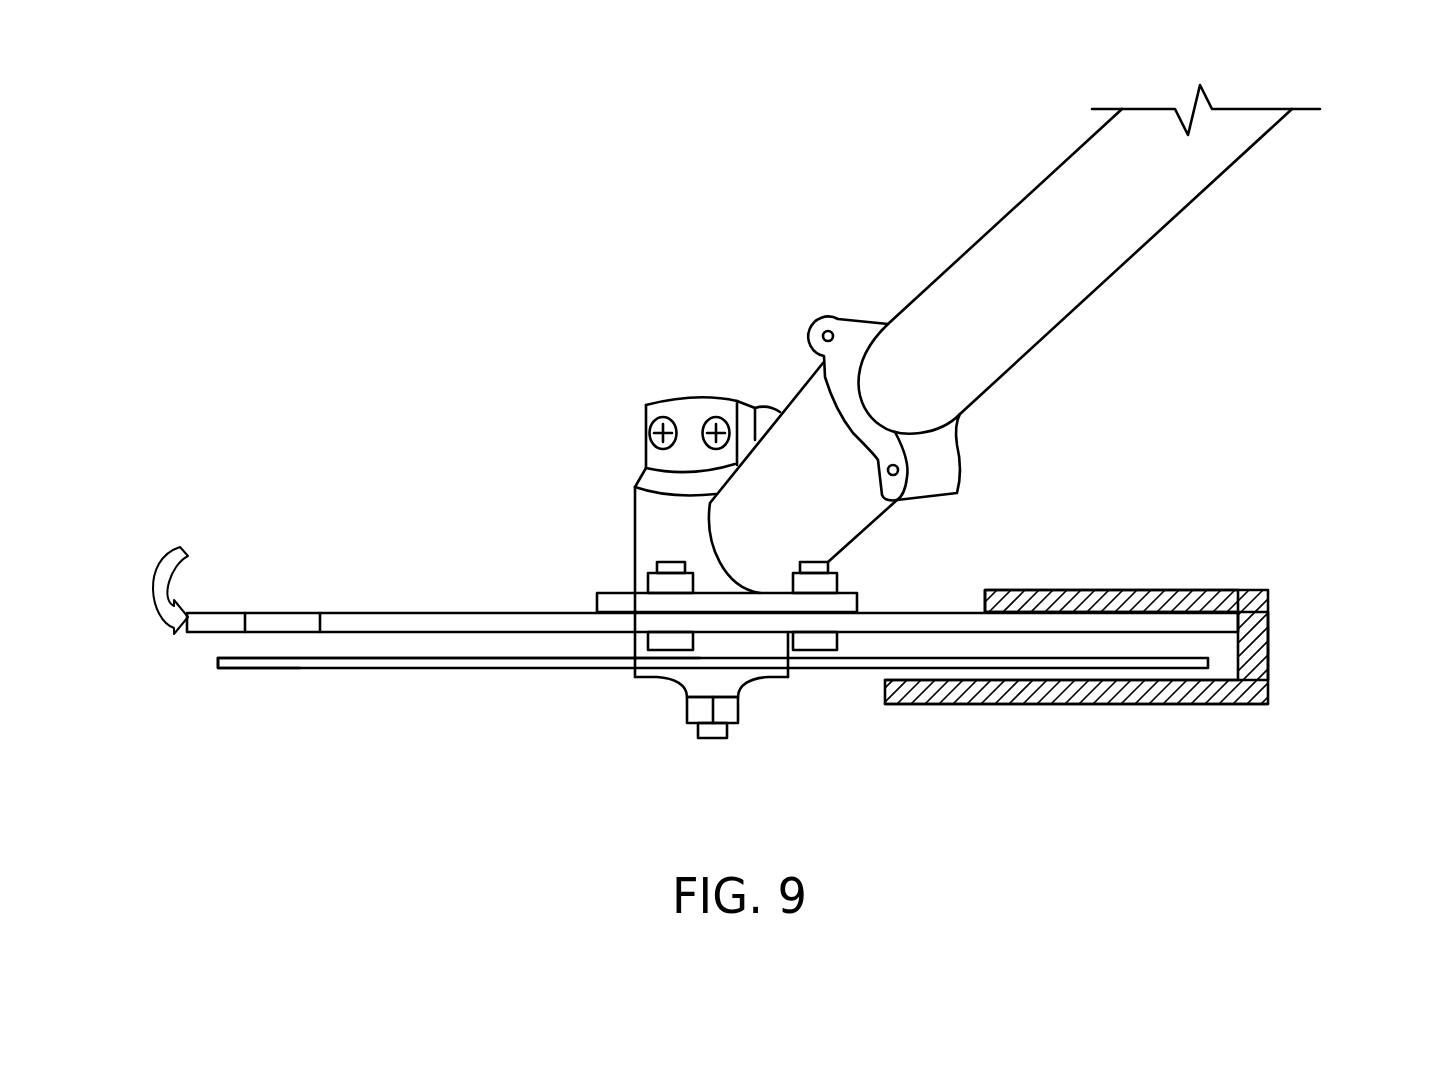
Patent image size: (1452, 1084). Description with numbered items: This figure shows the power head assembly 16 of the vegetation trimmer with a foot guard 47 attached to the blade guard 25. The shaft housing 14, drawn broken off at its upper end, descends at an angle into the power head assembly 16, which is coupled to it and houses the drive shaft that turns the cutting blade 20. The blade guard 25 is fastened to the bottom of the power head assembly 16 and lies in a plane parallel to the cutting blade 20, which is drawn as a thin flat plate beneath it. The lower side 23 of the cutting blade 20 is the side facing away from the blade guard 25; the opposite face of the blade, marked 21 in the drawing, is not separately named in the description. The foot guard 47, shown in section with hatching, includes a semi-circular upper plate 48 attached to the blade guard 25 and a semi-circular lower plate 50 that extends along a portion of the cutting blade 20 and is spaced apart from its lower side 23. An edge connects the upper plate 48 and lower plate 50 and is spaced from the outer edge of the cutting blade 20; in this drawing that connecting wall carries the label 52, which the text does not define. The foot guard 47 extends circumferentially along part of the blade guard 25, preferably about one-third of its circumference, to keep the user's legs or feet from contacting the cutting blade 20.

The shaft housing 14 is at (1108, 252).
The power head assembly 16 is at (745, 292).
The cutting blade 20 is at (661, 642).
The panel upper surface 21 is at (232, 658).
The lower side of the cutting blade 23 is at (238, 670).
The blade guard 25 is at (513, 607).
The foot guard 47 is at (1097, 608).
The upper plate 48 is at (1148, 590).
The lower plate 50 is at (1205, 703).
The bracket end wall 52 is at (1270, 637).